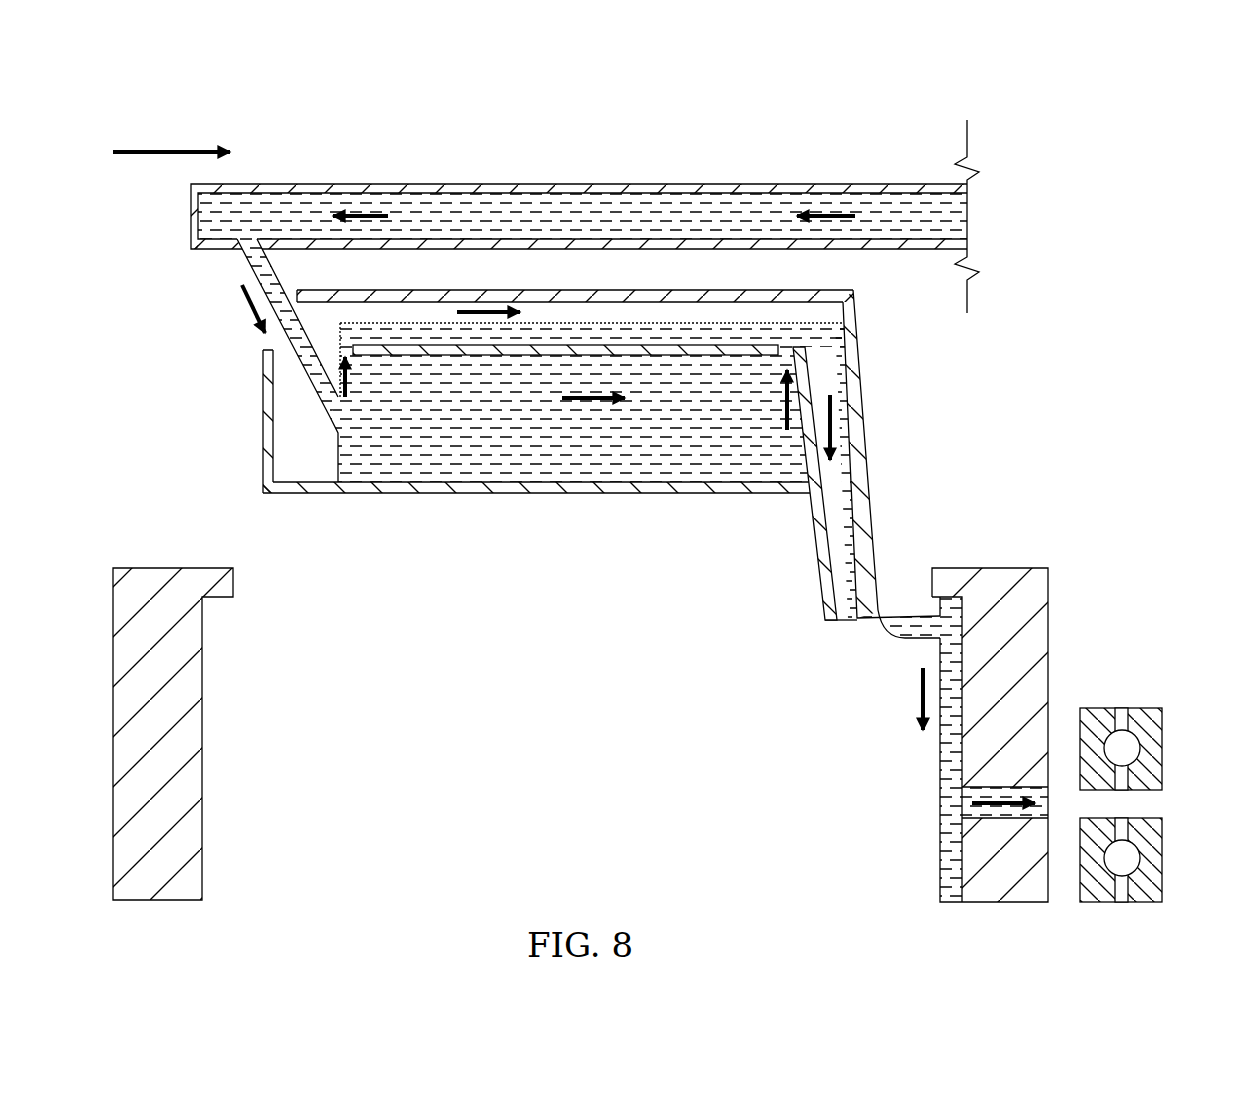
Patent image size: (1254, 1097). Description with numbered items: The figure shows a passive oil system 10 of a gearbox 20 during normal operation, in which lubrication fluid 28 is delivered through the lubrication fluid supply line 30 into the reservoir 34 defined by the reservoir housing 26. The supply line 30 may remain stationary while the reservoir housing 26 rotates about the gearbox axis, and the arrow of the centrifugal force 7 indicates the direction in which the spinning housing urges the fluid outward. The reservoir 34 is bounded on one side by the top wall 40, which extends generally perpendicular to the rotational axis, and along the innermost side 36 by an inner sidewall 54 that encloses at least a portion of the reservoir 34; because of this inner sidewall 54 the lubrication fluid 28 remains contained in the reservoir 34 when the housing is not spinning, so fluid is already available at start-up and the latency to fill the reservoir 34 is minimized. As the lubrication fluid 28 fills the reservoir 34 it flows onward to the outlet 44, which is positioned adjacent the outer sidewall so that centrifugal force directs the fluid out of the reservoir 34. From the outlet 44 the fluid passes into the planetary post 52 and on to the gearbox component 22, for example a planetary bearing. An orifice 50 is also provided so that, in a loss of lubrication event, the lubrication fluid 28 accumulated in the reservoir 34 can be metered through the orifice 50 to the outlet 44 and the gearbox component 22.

The centrifugal force 7 is at (162, 150).
The passive oil system 10 is at (669, 471).
The gearbox 20 is at (877, 106).
The gearbox component 22 is at (1153, 738).
The reservoir housing 26 is at (867, 363).
The lubrication fluid 28 is at (302, 368).
The lubrication fluid supply line 30 is at (682, 184).
The reservoir 34 is at (444, 431).
The innermost longitudinal side 36 is at (472, 421).
The top wall 40 is at (598, 296).
The outlet 44 is at (840, 595).
The orifice 50 is at (783, 355).
The planetary post 52 is at (1040, 677).
The inner sidewall 54 is at (263, 442).